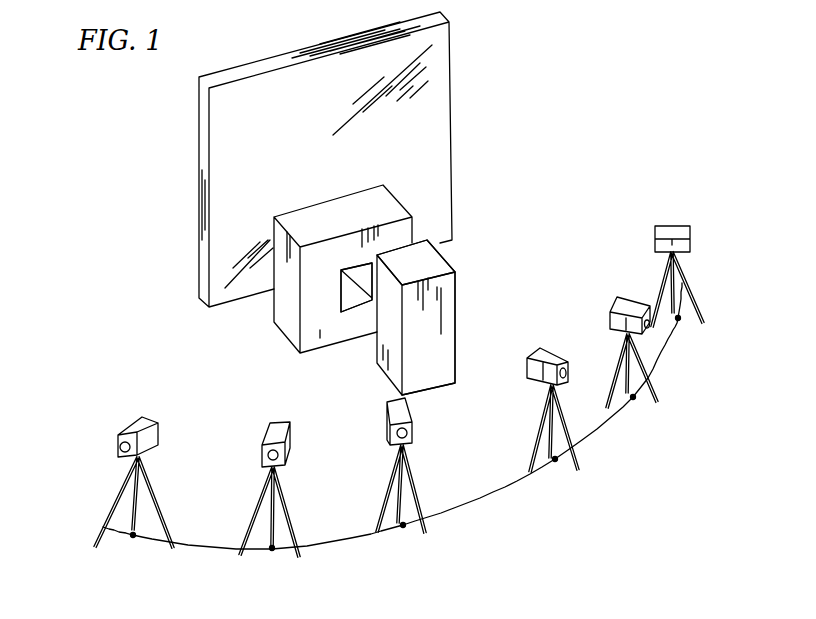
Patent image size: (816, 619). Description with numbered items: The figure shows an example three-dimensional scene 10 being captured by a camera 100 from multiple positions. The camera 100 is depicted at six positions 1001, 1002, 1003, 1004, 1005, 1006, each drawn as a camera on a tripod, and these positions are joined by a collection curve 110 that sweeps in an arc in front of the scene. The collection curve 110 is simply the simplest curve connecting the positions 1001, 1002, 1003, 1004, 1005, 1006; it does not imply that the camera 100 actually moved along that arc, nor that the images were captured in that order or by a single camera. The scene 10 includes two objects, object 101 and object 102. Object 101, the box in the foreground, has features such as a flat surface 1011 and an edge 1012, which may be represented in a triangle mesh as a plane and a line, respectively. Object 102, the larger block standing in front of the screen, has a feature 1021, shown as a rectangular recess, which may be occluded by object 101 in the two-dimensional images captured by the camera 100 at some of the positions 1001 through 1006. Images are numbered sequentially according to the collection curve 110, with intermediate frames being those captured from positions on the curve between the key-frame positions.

The scene 10 is at (542, 70).
The camera 100 is at (150, 434).
The object 101 is at (452, 240).
The object 102 is at (377, 203).
The collection curve 110 is at (502, 490).
The camera position 1001 is at (317, 440).
The camera position 1002 is at (272, 549).
The camera position 1003 is at (403, 525).
The camera position 1004 is at (555, 459).
The camera position 1005 is at (633, 397).
The camera position 1006 is at (678, 318).
The flat surface 1011 is at (437, 297).
The edge 1012 is at (455, 332).
The feature 1021 is at (362, 306).